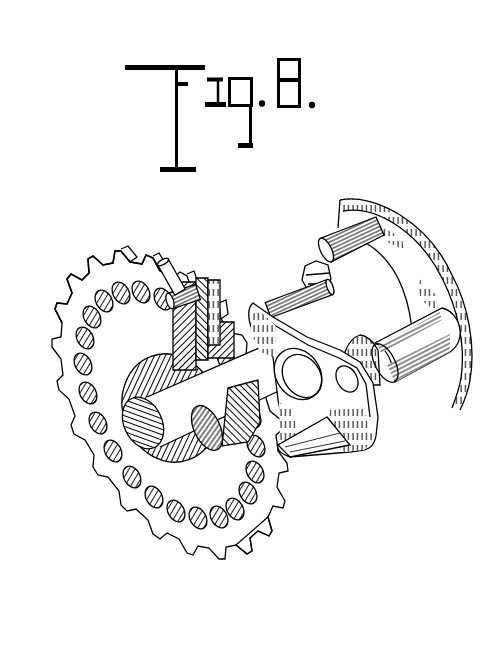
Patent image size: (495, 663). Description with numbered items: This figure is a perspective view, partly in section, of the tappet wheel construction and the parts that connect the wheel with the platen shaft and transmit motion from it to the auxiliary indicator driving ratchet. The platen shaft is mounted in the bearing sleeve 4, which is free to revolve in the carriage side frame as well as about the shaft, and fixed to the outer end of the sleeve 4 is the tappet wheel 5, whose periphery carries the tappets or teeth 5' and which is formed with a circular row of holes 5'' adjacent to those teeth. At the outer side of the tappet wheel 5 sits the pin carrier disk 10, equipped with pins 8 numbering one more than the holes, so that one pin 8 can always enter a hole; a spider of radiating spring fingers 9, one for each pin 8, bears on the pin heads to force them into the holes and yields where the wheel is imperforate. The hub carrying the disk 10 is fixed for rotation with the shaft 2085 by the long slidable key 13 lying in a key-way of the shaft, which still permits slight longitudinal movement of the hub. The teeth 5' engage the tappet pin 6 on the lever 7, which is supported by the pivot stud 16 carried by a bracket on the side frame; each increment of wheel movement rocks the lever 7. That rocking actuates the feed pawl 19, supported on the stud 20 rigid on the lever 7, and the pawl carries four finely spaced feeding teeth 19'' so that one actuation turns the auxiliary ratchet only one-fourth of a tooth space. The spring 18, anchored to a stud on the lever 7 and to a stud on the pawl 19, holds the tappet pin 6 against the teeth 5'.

The bearing sleeve 4 is at (123, 383).
The tappet wheel 5 is at (170, 392).
The peripheral tappets or teeth 5' is at (276, 525).
The holes in sprocket wheel 5'' is at (151, 405).
The tappet pin 6 is at (320, 463).
The lever 7 is at (382, 421).
The pins 8 is at (185, 273).
The spring fingers 9 is at (222, 318).
The pin carrier disk 10 is at (178, 283).
The key 13 is at (219, 437).
The pivot stud 16 is at (350, 338).
The spring 18 is at (329, 278).
The feed pawl 19 is at (405, 304).
The feeding teeth 19'' is at (338, 239).
The stud 20 is at (420, 370).
The hub 2085 is at (123, 425).